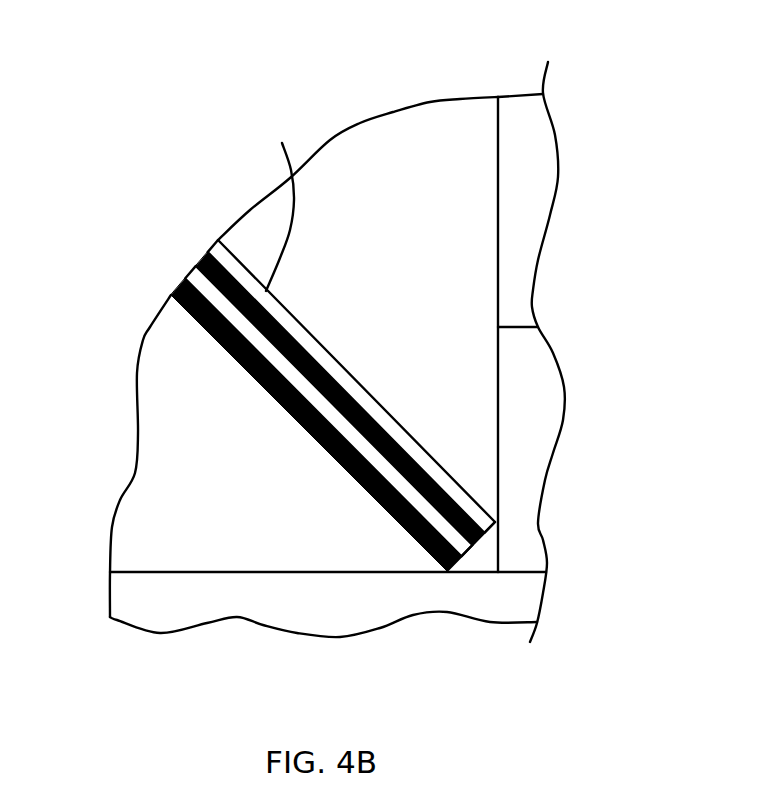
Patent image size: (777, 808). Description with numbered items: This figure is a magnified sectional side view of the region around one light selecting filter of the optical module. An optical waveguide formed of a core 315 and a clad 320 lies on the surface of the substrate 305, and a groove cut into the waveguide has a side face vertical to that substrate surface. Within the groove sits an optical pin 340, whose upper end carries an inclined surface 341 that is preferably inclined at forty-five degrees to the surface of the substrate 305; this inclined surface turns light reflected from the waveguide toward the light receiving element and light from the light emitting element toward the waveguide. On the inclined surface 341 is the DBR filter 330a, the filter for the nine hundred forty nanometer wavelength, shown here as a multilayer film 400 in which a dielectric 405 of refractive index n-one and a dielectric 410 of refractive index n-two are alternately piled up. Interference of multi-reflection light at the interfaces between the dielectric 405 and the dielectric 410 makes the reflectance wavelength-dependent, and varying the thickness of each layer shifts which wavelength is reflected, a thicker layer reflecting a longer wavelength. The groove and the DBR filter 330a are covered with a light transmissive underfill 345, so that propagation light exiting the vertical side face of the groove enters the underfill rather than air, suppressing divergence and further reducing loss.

The substrate 305 is at (415, 610).
The core 315 is at (527, 103).
The clad 320 is at (553, 395).
The DBR filter 330a is at (470, 550).
The optical pin 340 is at (398, 133).
The inclined surface 341 is at (277, 200).
The underfill 345 is at (123, 550).
The multilayer film 400 is at (272, 368).
The dielectric 405 is at (203, 262).
The dielectric 410 is at (206, 250).